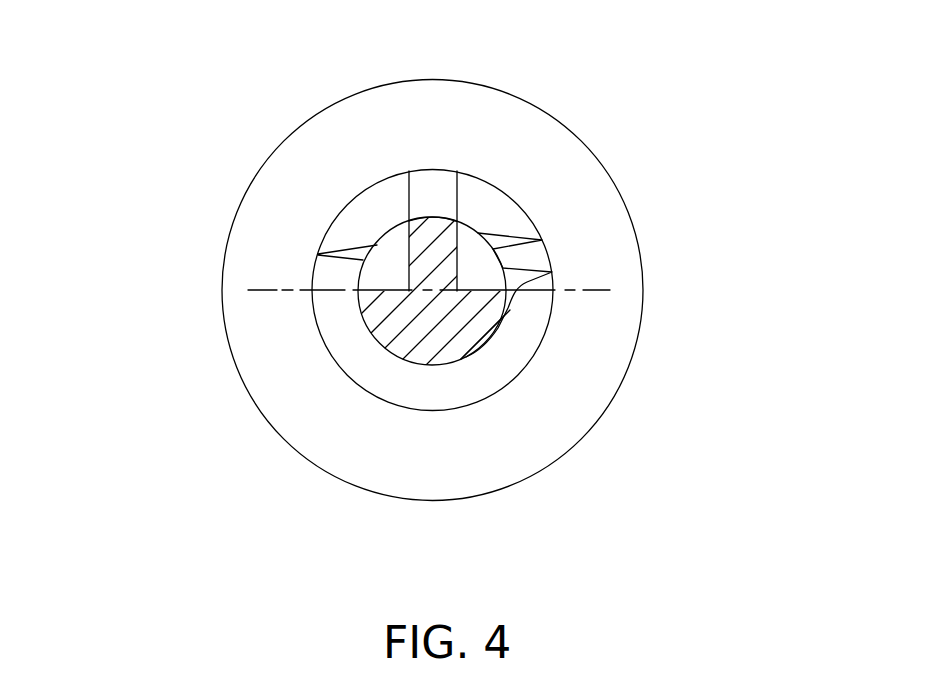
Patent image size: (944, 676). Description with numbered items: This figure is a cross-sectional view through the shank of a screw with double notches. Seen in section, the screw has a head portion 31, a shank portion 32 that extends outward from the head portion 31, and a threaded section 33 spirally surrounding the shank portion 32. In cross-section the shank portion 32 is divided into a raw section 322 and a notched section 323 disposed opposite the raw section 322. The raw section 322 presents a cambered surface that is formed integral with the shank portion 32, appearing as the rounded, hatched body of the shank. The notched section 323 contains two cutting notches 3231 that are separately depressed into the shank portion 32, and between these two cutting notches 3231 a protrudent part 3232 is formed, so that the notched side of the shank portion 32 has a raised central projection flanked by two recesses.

The head portion 31 is at (263, 343).
The shank portion 32 is at (378, 347).
The threaded section 33 is at (508, 353).
The raw section 322 is at (435, 343).
The notched section 323 is at (388, 227).
The cutting notches 3231 is at (383, 267).
The protrudent part 3232 is at (433, 230).